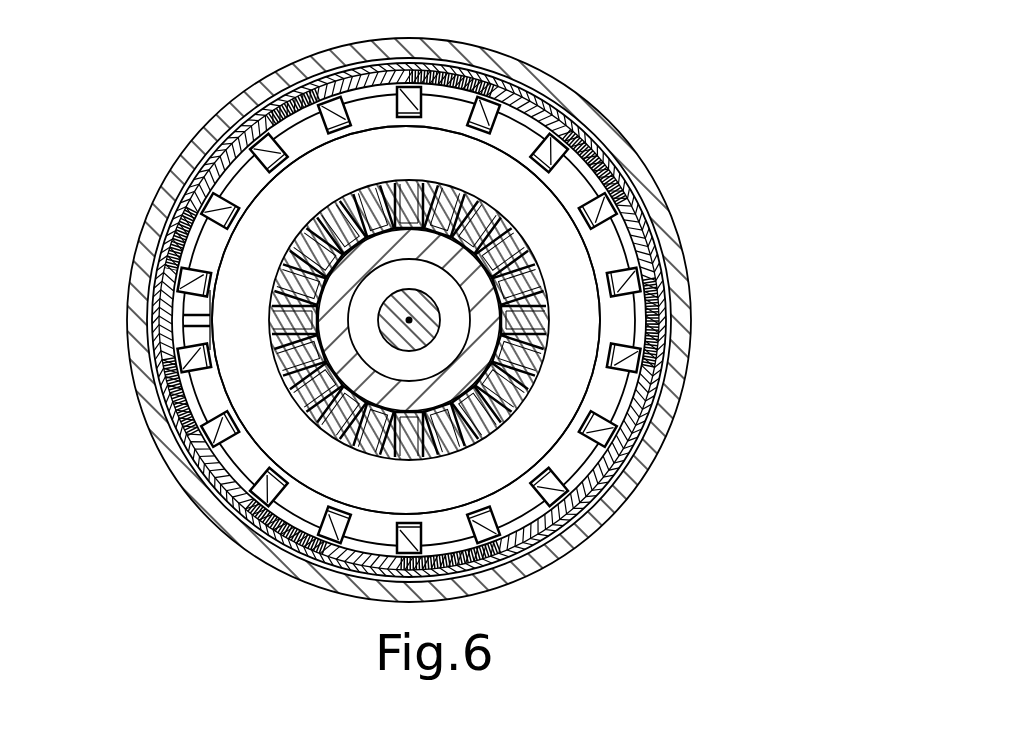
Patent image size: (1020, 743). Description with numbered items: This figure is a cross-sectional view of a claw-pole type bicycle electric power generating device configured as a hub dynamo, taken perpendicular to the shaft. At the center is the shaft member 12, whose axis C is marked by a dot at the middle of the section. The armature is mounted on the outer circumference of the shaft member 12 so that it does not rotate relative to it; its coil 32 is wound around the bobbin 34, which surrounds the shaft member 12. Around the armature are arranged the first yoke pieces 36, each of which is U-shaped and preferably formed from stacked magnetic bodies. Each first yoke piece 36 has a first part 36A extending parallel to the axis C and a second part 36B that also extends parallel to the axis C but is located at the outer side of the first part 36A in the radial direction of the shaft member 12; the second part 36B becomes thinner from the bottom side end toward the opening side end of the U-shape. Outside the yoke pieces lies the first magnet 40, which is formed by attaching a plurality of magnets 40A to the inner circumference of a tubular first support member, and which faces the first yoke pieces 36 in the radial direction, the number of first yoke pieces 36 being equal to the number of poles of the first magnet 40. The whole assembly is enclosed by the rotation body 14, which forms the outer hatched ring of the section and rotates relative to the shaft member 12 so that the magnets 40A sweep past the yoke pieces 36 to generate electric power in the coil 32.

The shaft member 12 is at (401, 344).
The rotation body 14 is at (426, 320).
The coil 32 is at (434, 320).
The bobbin 34 is at (401, 344).
The first yoke piece 36 is at (383, 318).
The first part 36A is at (406, 320).
The second part 36B is at (402, 389).
The first magnet 40 is at (441, 320).
The magnets 40A is at (460, 320).
The axis C is at (435, 307).